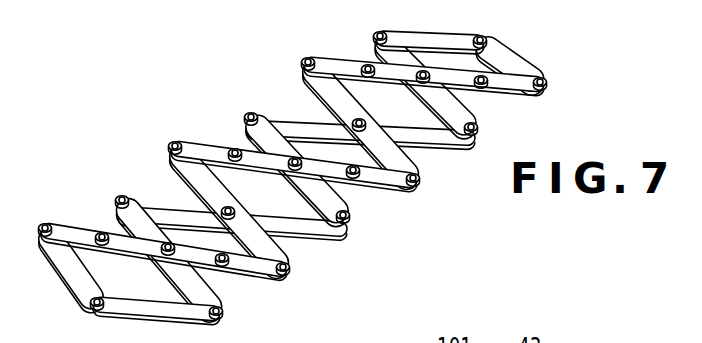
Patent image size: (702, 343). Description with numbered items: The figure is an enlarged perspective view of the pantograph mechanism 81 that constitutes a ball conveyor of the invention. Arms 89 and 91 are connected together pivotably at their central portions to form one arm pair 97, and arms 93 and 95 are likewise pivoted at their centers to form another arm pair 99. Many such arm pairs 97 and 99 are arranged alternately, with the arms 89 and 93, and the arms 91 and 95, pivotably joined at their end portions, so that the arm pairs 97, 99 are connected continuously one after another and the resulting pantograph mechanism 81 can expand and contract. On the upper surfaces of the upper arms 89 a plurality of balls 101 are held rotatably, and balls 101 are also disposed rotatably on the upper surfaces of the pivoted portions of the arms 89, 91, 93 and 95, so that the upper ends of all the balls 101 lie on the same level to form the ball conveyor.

The pantograph mechanism 81 is at (222, 129).
The arm 89 is at (334, 68).
The arm 91 is at (427, 105).
The arm 93 is at (172, 161).
The arm 95 is at (433, 134).
The arm pair 97 is at (97, 217).
The arm pair 99 is at (303, 58).
The ball 101 is at (539, 78).